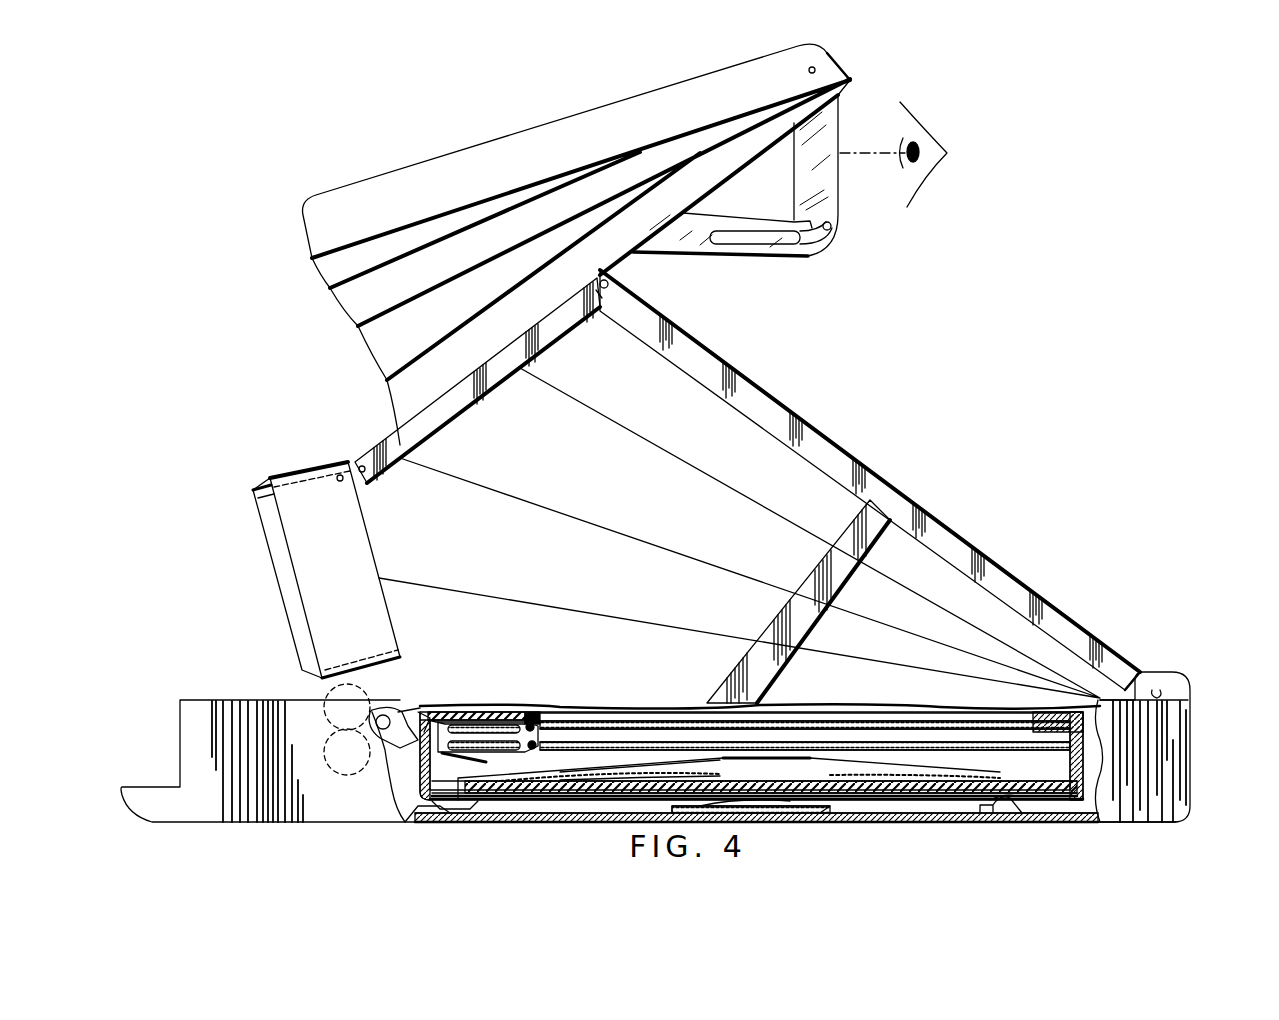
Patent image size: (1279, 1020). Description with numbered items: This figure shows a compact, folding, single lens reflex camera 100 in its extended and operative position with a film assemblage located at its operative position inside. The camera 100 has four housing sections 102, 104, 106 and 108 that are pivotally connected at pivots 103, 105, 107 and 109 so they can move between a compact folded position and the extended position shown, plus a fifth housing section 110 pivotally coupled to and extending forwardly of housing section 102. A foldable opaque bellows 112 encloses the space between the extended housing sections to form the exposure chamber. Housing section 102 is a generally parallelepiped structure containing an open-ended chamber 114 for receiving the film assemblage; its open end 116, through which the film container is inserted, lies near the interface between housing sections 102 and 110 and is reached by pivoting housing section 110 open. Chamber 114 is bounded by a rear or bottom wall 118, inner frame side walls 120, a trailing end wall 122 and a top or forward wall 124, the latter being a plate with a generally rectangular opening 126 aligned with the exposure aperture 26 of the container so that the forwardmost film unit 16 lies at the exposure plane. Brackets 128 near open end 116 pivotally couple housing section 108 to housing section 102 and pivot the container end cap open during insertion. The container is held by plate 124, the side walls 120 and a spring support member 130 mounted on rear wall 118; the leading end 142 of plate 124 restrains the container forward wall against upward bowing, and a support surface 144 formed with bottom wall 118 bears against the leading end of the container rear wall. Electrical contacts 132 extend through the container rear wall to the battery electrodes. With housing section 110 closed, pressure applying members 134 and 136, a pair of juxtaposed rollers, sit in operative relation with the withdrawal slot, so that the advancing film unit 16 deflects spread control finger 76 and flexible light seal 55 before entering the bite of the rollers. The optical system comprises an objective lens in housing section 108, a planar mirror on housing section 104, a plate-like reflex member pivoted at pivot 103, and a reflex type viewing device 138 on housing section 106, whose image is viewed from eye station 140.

The camera 100 is at (1000, 302).
The housing section 102 is at (942, 826).
The pivot 103 is at (1158, 688).
The housing section 104 is at (1117, 627).
The pivot 105 is at (612, 286).
The housing section 106 is at (362, 410).
The pivot 107 is at (356, 462).
The housing section 108 is at (296, 458).
The pivot 109 is at (402, 706).
The housing section 110 is at (216, 830).
The bellows 112 is at (558, 576).
The chamber 114 is at (866, 800).
The open end 116 is at (424, 813).
The rear wall 118 is at (903, 818).
The inner frame side walls 120 is at (1097, 813).
The trailing end wall 122 is at (1192, 760).
The forward wall 124 is at (468, 706).
The rectangular opening 126 is at (527, 712).
The brackets 128 is at (400, 712).
The spring support member 130 is at (806, 814).
The electrical contacts 132 is at (1002, 813).
The pressure applying member 134 is at (334, 698).
The pressure applying member 136 is at (350, 776).
The viewing device 138 is at (418, 162).
The eye station 140 is at (877, 98).
The leading end 142 is at (480, 706).
The support surface 144 is at (468, 809).
The film units 16 is at (668, 735).
The exposure aperture 26 is at (568, 720).
The flexible light seal 55 is at (428, 714).
The spread control finger 76 is at (443, 753).